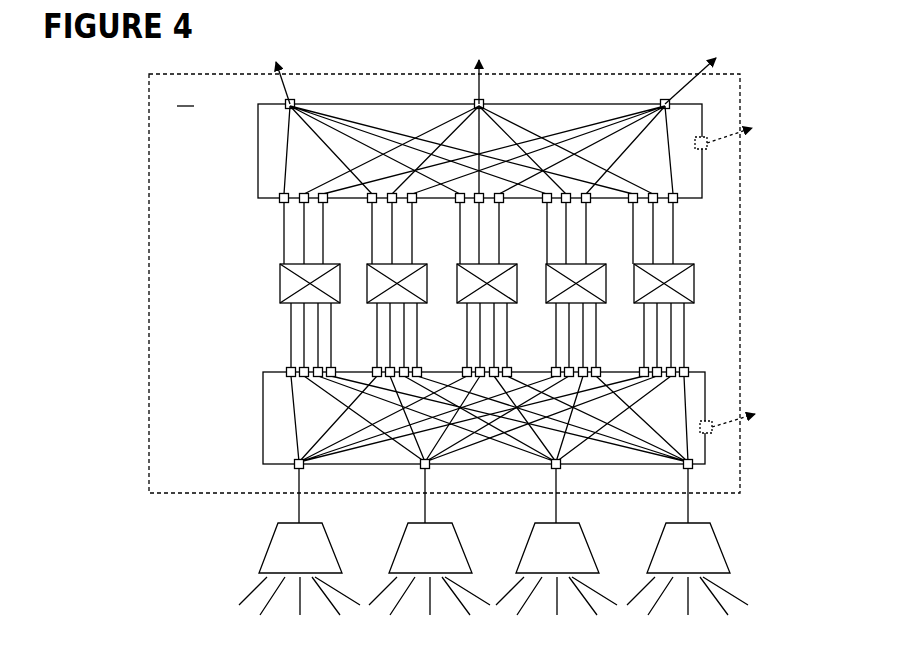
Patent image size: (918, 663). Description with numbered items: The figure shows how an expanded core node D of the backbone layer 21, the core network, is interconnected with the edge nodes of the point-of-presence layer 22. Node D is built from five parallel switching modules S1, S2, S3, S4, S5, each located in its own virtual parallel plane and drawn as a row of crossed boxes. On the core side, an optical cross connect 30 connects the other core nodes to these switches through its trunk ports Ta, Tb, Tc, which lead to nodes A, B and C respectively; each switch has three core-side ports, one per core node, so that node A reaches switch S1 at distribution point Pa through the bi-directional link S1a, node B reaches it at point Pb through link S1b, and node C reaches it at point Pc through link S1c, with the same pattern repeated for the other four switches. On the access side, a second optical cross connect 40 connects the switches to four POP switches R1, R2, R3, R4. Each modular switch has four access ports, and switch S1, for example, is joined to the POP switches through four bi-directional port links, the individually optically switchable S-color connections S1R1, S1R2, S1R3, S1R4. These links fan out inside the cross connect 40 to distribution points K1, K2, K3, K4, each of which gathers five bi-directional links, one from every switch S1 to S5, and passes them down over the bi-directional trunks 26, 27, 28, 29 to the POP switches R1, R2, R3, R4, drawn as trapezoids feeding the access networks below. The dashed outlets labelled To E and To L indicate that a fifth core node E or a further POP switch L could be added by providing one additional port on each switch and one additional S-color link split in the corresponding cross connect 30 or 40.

The backbone layer 21 is at (112, 224).
The point-of-presence (POP) layer 22 is at (422, 578).
The trunk 26 is at (298, 501).
The trunk 27 is at (424, 502).
The trunk 28 is at (555, 502).
The trunk 29 is at (690, 498).
The optical cross connect 30 is at (499, 128).
The optical cross connect 40 is at (497, 433).
The core node D is at (186, 95).
The trunk port Ta is at (301, 96).
The trunk port Tb is at (467, 96).
The trunk port Tc is at (664, 93).
The switching module S1 is at (295, 283).
The switching module S2 is at (386, 274).
The switching module S3 is at (475, 274).
The switching module S4 is at (561, 274).
The switching module S5 is at (651, 272).
The bi-directional link S1a is at (284, 213).
The bi-directional link S1b is at (306, 230).
The bi-directional link S1c is at (326, 250).
The S-color connection S1R1 is at (243, 320).
The S-color connection S1R2 is at (291, 312).
The S-color connection S1R3 is at (305, 328).
The S-color connection S1R4 is at (331, 356).
The distribution point K1 is at (287, 477).
The distribution point K2 is at (411, 477).
The distribution point K3 is at (542, 479).
The distribution point K4 is at (674, 478).
The POP switch R1 is at (299, 569).
The POP switch R2 is at (429, 569).
The POP switch R3 is at (556, 569).
The POP switch R4 is at (687, 569).